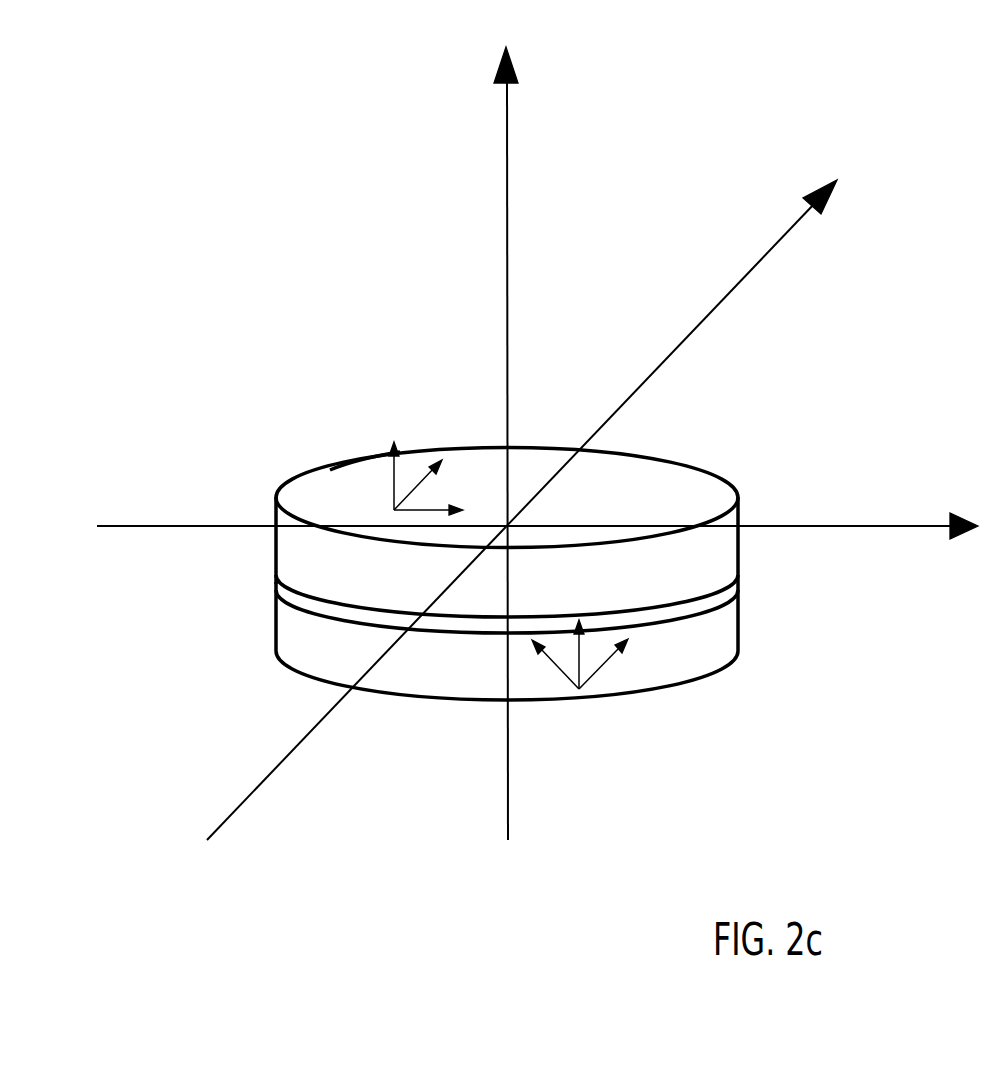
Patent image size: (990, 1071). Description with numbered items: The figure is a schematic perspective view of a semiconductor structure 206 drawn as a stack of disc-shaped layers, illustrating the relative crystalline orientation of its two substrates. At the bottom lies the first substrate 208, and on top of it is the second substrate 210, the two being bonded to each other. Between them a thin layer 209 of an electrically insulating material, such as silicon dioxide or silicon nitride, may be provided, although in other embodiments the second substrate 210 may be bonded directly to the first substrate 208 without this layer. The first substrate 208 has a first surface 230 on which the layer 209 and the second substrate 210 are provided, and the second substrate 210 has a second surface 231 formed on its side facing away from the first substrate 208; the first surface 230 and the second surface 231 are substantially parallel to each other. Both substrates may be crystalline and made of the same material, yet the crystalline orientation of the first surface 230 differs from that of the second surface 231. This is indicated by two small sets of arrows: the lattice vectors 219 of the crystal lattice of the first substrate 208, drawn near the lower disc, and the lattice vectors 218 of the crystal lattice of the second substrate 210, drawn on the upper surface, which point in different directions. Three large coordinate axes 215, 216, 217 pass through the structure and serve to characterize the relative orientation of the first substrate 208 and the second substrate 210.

The semiconductor structure 206 is at (531, 573).
The first substrate 208 is at (730, 641).
The layer of electrically insulating material 209 is at (740, 579).
The second substrate 210 is at (740, 513).
The coordinate axis 215 is at (895, 526).
The coordinate axis 216 is at (712, 305).
The coordinate axis 217 is at (506, 184).
The lattice vectors 218 is at (374, 432).
The lattice vectors 219 is at (600, 693).
The first surface 230 is at (292, 598).
The second surface 231 is at (338, 476).